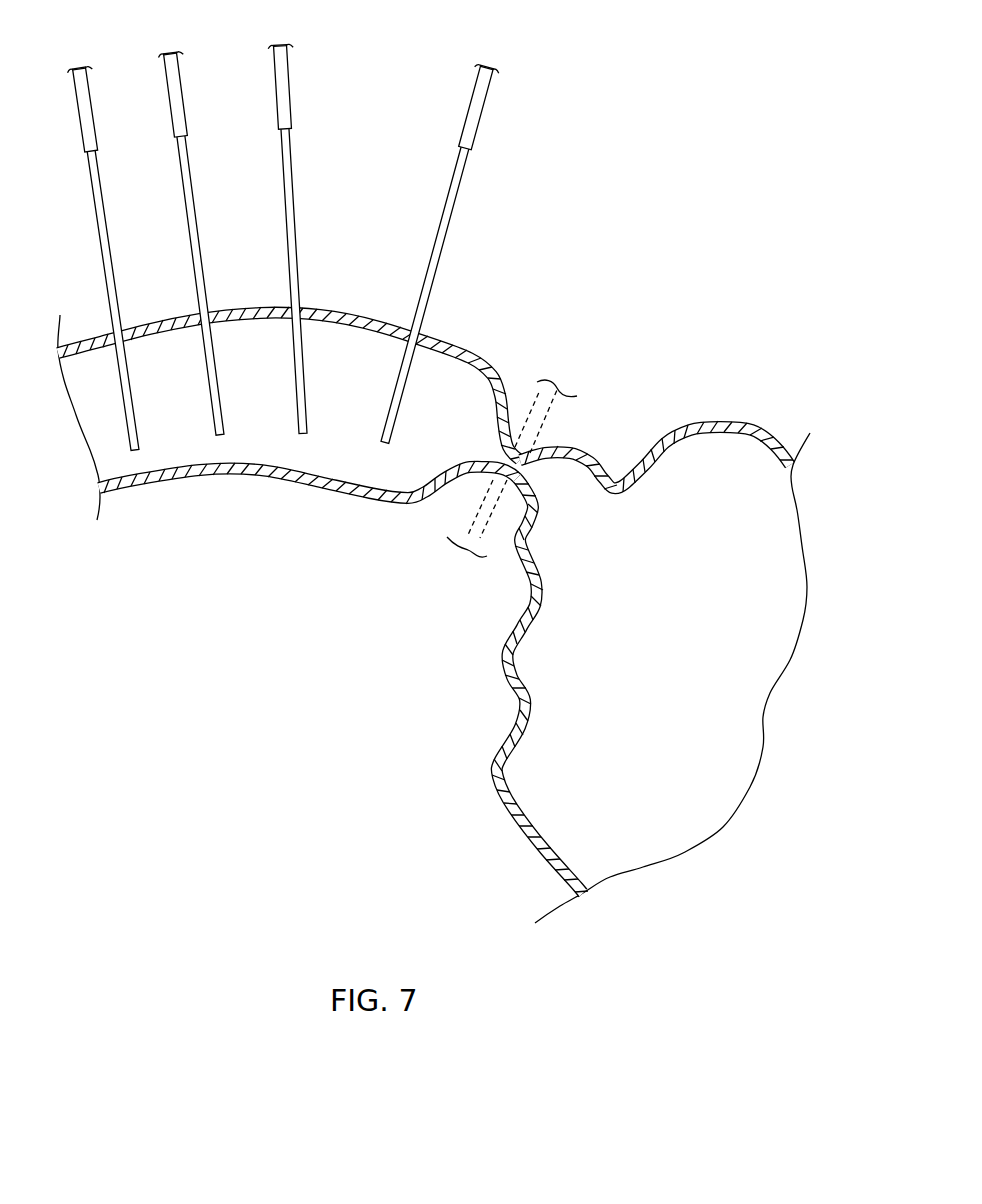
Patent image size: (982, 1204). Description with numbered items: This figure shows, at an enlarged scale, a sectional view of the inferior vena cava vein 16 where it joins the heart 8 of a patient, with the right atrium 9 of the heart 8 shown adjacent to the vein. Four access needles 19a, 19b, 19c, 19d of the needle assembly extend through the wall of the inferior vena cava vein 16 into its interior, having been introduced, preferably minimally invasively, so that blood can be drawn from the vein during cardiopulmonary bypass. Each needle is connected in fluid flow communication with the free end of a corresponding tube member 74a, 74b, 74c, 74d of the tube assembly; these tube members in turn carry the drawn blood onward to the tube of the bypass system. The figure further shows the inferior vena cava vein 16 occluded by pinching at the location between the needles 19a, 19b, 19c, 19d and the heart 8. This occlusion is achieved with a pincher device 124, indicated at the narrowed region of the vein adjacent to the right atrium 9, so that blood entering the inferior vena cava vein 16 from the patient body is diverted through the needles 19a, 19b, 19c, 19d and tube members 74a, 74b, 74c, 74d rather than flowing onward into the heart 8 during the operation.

The heart 8 is at (703, 913).
The right atrium 9 is at (485, 830).
The inferior vena cava vein 16 is at (257, 477).
The access needle 19a is at (437, 266).
The access needle 19b is at (297, 256).
The access needle 19c is at (199, 246).
The access needle 19d is at (111, 259).
The tube member 74a is at (481, 114).
The tube member 74b is at (289, 90).
The tube member 74c is at (183, 100).
The tube member 74d is at (92, 117).
The pincher device 124 is at (553, 434).